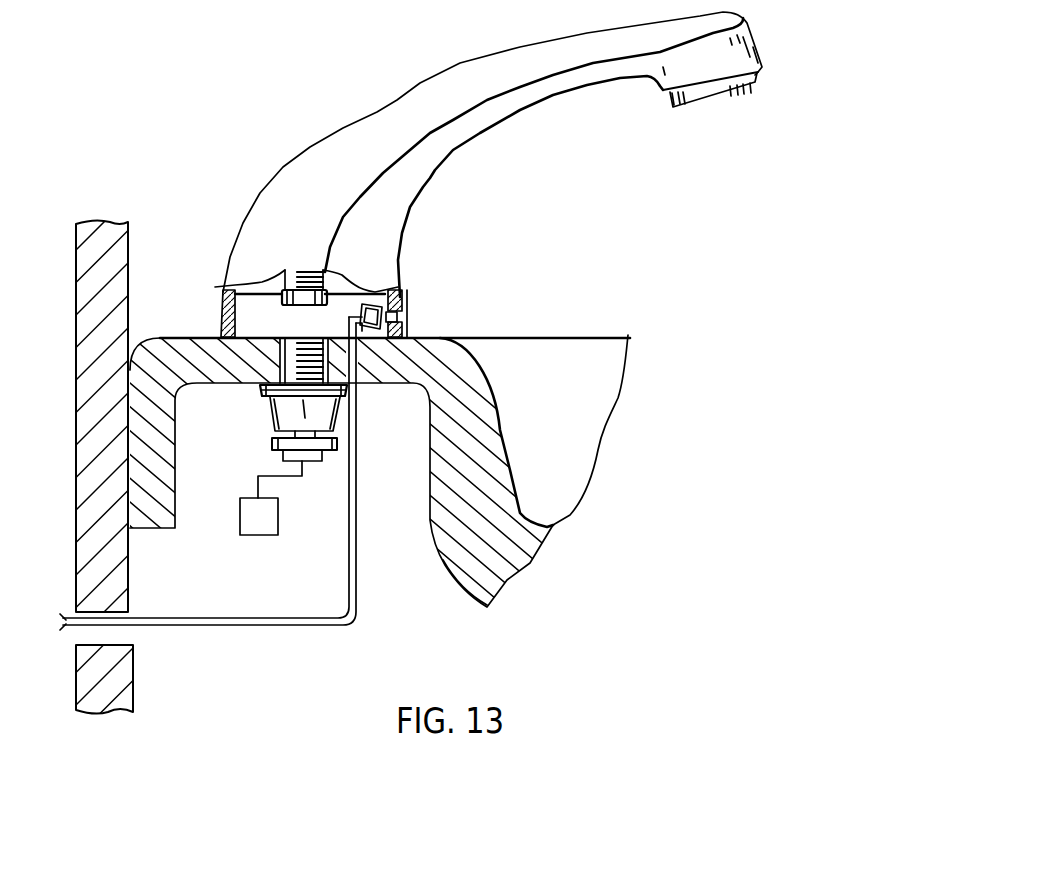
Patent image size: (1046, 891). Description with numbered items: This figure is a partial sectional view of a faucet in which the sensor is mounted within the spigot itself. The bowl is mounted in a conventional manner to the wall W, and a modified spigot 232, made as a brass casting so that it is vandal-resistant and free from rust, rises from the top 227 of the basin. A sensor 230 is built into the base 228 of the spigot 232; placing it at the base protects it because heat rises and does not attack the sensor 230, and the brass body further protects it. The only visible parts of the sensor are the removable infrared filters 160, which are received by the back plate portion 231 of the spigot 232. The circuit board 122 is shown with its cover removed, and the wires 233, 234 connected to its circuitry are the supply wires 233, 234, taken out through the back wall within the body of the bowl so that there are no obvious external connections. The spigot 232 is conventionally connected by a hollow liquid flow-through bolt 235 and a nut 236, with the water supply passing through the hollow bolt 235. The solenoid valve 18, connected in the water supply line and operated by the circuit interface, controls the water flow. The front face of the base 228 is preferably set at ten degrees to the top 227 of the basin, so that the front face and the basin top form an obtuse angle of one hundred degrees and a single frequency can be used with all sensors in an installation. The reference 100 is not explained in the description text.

The wall W is at (131, 282).
The solenoid valve 18 is at (258, 527).
The faucet valve cartridge 100 is at (357, 282).
The circuit board 122 is at (375, 302).
The infrared filters 160 is at (404, 315).
The top of the basin 227 is at (599, 333).
The base 228 is at (222, 322).
The sensor 230 is at (407, 291).
The back plate portion 231 is at (418, 333).
The spigot 232 is at (497, 134).
The wire 233 is at (348, 547).
The wire 234 is at (358, 488).
The hollow bolt 235 is at (280, 363).
The nut 236 is at (278, 421).